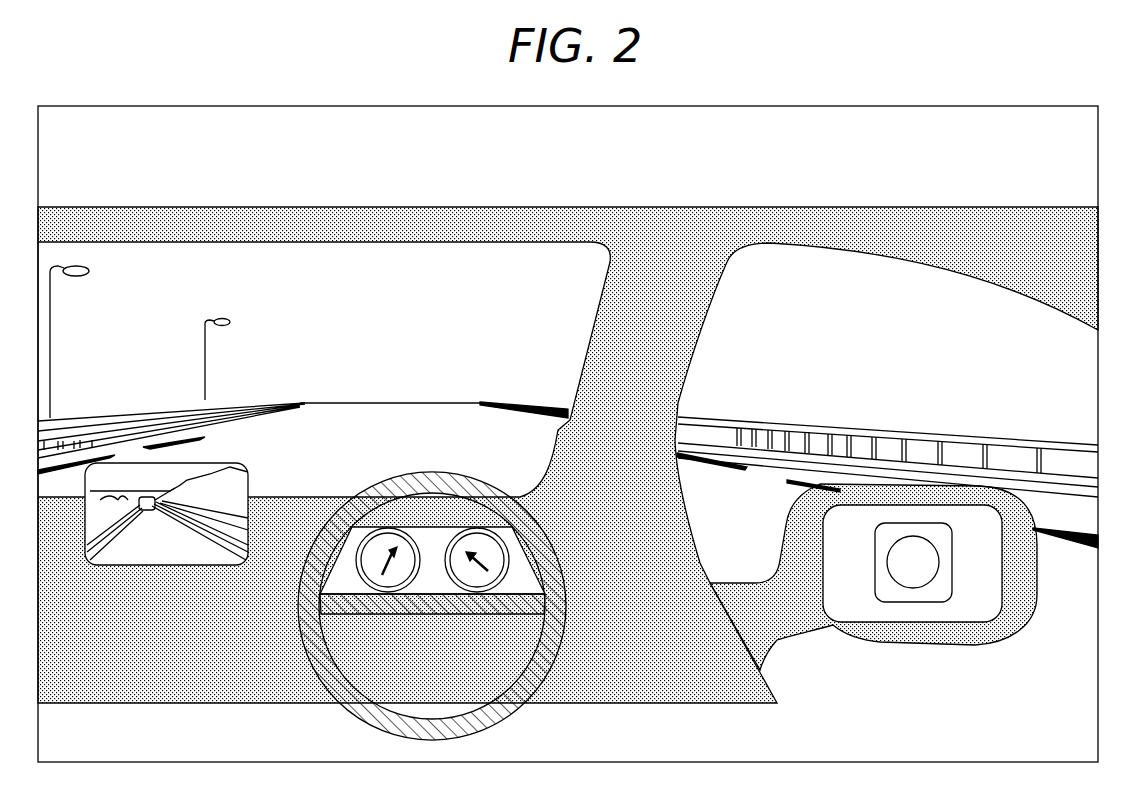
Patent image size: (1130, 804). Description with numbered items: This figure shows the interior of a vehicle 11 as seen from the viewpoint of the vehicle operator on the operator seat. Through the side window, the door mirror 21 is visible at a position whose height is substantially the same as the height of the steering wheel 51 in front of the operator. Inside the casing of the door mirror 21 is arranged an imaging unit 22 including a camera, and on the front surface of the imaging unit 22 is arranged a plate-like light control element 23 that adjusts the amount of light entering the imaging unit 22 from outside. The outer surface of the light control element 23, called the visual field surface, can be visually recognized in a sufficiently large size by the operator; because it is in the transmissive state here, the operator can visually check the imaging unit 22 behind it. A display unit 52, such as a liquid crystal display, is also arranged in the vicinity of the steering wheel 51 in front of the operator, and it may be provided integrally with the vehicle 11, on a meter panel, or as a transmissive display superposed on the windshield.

The vehicle 11 is at (565, 206).
The door mirror 21 is at (878, 474).
The imaging unit 22 is at (910, 602).
The light control element 23 is at (968, 521).
The steering wheel 51 is at (435, 472).
The display unit 52 is at (248, 468).